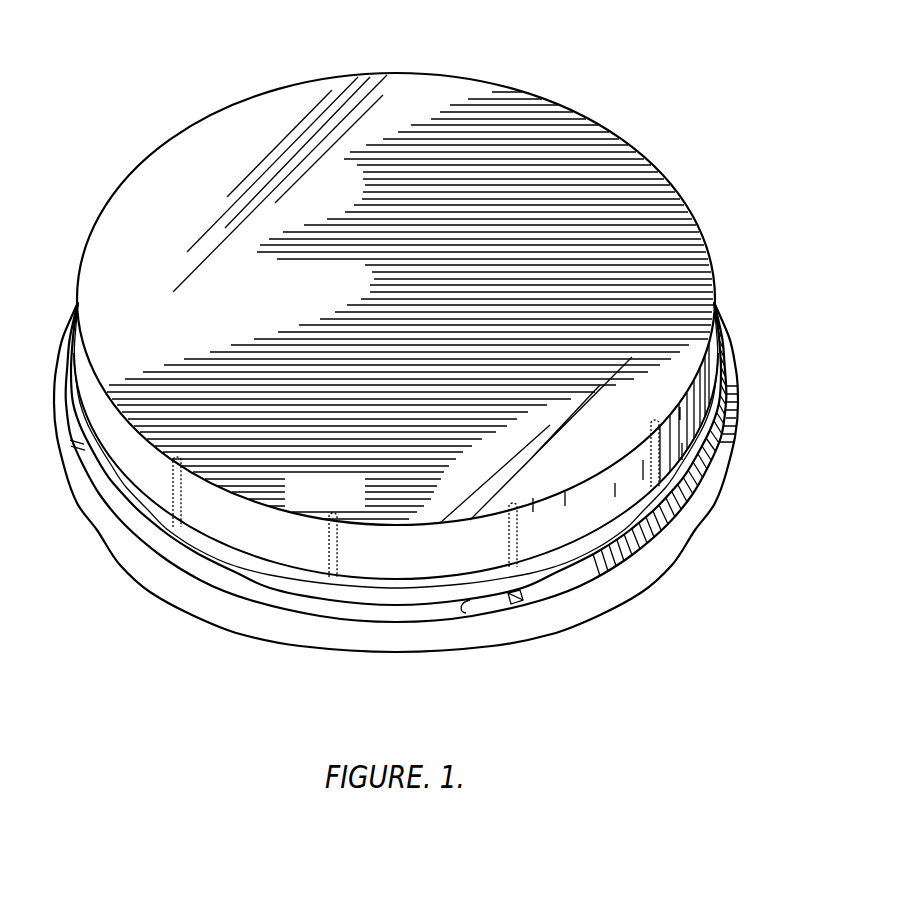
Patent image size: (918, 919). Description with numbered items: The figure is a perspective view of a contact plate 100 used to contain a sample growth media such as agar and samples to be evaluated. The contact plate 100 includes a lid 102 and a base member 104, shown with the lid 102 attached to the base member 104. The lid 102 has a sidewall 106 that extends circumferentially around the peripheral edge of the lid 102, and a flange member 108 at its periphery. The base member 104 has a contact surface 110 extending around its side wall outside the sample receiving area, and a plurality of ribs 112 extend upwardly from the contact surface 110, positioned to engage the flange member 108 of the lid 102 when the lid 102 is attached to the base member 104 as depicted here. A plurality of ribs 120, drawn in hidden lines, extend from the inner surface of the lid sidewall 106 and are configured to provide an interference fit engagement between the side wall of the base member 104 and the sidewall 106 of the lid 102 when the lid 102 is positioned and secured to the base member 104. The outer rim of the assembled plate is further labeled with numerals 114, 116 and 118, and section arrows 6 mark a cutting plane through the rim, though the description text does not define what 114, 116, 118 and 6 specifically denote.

The contact plate 100 is at (574, 84).
The lid 102 is at (644, 155).
The base member 104 is at (102, 502).
The sidewall 106 is at (706, 388).
The flange member 108 is at (690, 468).
The contact surface 110 is at (468, 603).
The ribs 112 is at (525, 595).
The outer rim band 114 is at (683, 527).
The top surface 116 is at (192, 188).
The bottom edge of rim 118 is at (235, 623).
The ribs 120 is at (517, 513).
The section line 6 is at (298, 662).